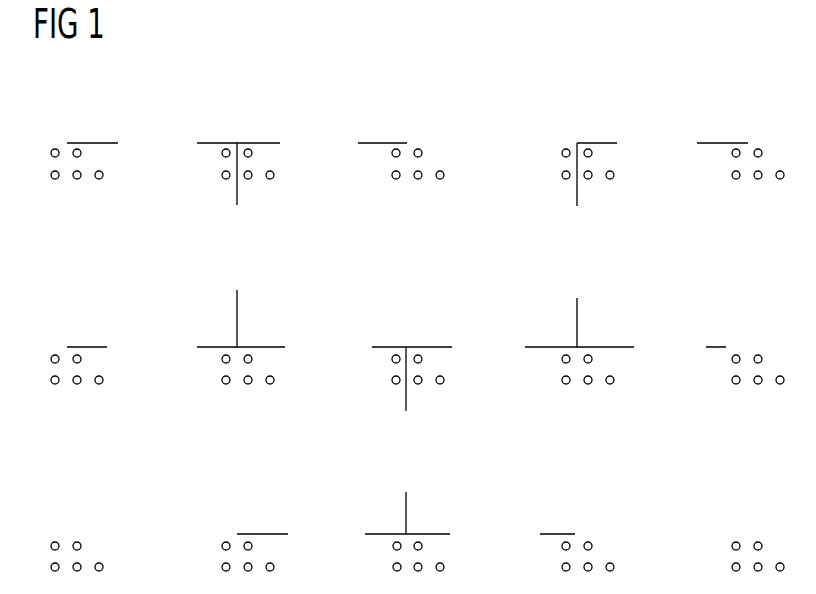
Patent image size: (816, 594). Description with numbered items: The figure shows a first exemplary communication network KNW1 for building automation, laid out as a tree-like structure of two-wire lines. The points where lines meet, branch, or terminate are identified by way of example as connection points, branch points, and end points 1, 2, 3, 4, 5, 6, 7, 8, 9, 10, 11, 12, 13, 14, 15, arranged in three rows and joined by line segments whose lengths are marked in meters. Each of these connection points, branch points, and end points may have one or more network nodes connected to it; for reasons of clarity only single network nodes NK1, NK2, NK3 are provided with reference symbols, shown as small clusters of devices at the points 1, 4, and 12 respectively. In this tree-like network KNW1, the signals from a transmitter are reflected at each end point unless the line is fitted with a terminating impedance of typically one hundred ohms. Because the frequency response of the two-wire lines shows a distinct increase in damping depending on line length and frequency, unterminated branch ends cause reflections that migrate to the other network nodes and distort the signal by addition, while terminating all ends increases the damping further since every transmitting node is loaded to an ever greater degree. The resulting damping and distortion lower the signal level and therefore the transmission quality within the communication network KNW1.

The connection point 1 is at (76, 147).
The connection point 2 is at (247, 147).
The connection point 3 is at (417, 147).
The connection point 4 is at (587, 147).
The connection point 5 is at (757, 147).
The connection point 6 is at (76, 351).
The connection point 7 is at (247, 351).
The connection point 8 is at (417, 351).
The connection point 9 is at (587, 351).
The connection point 10 is at (757, 351).
The connection point 11 is at (75, 538).
The connection point 12 is at (245, 538).
The connection point 13 is at (415, 538).
The connection point 14 is at (585, 538).
The connection point 15 is at (757, 538).
The network node NK1 is at (72, 129).
The network node NK2 is at (587, 131).
The network node NK3 is at (243, 518).
The communication network KNW1 is at (487, 103).